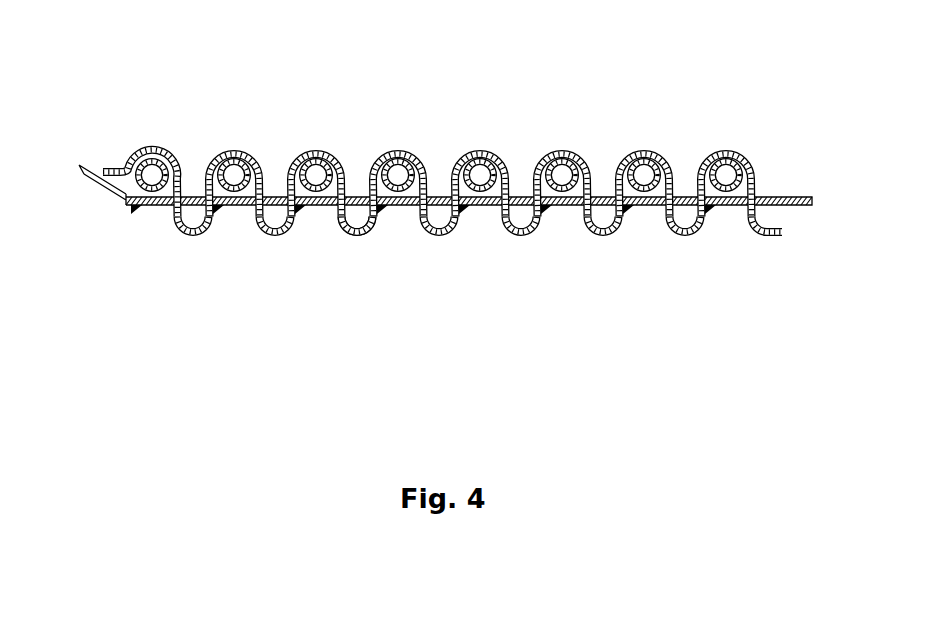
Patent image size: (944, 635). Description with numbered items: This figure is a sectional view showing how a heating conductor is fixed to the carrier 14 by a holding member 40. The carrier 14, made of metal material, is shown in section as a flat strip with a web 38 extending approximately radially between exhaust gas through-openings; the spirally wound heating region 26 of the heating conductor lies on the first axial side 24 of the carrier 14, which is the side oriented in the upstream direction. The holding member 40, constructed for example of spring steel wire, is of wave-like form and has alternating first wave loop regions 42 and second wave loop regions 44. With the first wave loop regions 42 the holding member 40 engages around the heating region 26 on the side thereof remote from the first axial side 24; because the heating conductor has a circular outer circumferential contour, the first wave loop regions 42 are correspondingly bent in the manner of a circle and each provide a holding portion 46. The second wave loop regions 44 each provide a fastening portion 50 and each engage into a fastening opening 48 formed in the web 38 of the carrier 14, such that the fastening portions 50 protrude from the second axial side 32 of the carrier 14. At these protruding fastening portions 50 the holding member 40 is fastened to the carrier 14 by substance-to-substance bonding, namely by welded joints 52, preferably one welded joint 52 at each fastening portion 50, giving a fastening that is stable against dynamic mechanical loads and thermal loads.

The first axial side 24 is at (464, 192).
The heating region 26 is at (481, 152).
The second axial side 32 is at (442, 228).
The carrier 14 is at (464, 206).
The web 38 is at (767, 197).
The holding member 40 is at (180, 236).
The first wave loop region 42 is at (236, 152).
The second wave loop region 44 is at (337, 225).
The holding portion 46 is at (322, 152).
The fastening opening 48 is at (685, 197).
The fastening portion 50 is at (360, 236).
The welded joint 52 is at (464, 225).